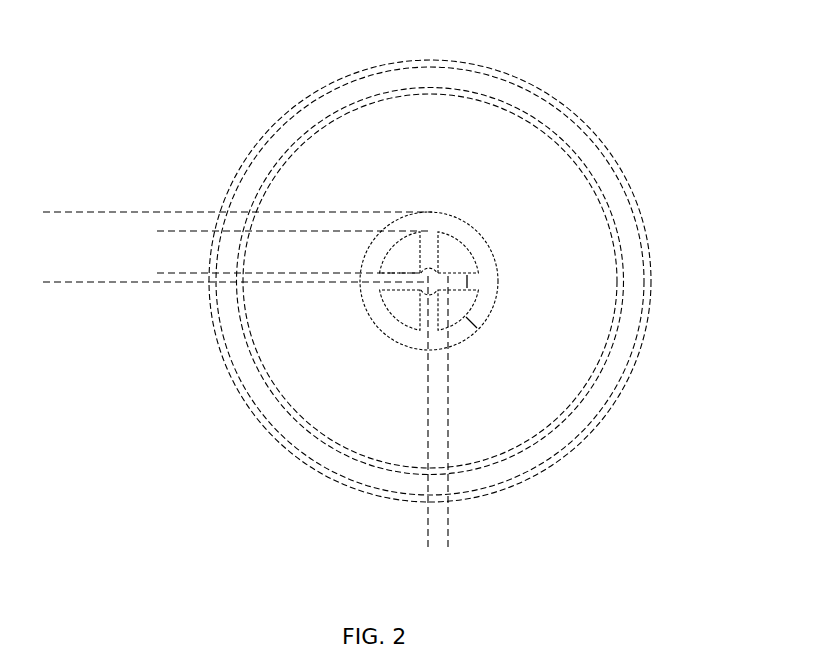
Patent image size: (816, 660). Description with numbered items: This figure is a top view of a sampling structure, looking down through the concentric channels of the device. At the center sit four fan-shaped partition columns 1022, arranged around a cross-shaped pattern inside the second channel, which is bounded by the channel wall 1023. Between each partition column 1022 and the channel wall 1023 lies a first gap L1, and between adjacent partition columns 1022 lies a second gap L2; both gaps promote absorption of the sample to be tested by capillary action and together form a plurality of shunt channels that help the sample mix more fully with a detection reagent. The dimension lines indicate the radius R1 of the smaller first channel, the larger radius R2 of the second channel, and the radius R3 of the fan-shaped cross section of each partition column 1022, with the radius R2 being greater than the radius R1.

The partition column 1022 is at (455, 252).
The channel wall 1023 is at (490, 250).
The radius of the first channel R1 is at (446, 533).
The radius of the second channel R2 is at (105, 214).
The radius of the fan-shape R3 is at (175, 233).
The first gap L1 is at (486, 331).
The second gap L2 is at (479, 284).